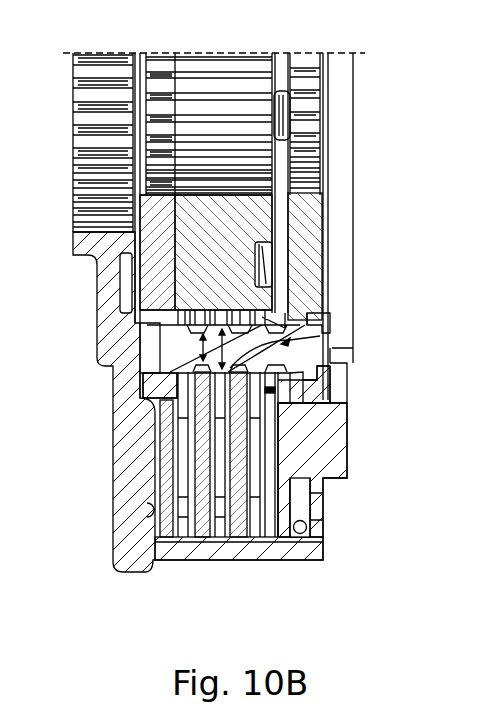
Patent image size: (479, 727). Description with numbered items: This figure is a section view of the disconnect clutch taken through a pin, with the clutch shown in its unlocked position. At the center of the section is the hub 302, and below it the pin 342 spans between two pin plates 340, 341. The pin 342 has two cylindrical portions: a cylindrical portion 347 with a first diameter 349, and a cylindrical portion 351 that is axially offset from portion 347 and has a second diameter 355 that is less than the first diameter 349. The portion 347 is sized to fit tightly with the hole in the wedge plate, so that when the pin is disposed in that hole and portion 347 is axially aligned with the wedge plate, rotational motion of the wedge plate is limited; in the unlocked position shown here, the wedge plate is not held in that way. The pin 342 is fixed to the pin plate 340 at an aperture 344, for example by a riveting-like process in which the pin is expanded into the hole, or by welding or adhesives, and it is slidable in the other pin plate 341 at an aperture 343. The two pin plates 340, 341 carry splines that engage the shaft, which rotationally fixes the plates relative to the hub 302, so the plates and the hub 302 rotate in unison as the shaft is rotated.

The hub 302 is at (238, 225).
The pin plate 341 is at (160, 288).
The aperture 343 is at (150, 342).
The second diameter 355 is at (215, 345).
The cylindrical portion 351 is at (200, 325).
The cylindrical portion 347 is at (222, 323).
The pin 342 is at (322, 333).
The aperture 344 is at (333, 350).
The pin plate 340 is at (330, 388).
The first diameter 349 is at (318, 444).